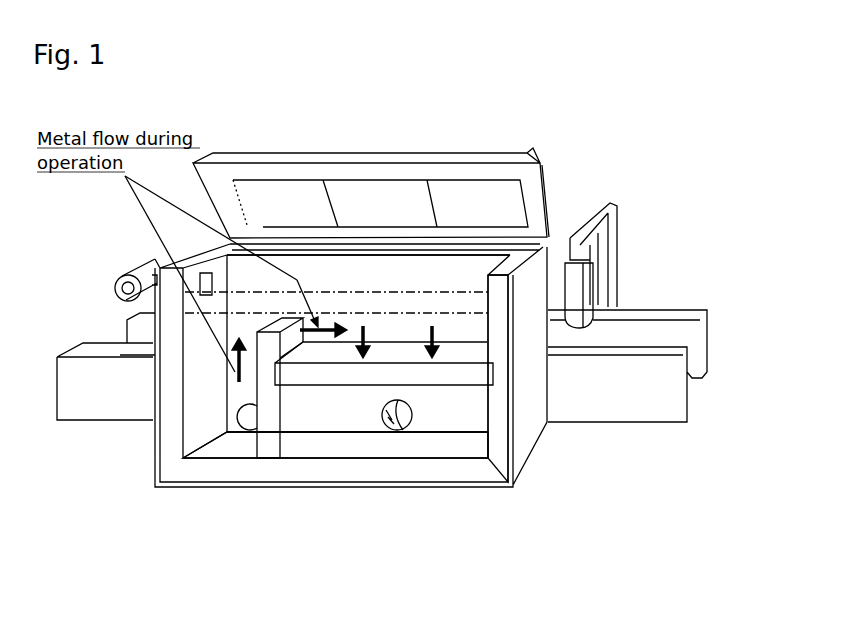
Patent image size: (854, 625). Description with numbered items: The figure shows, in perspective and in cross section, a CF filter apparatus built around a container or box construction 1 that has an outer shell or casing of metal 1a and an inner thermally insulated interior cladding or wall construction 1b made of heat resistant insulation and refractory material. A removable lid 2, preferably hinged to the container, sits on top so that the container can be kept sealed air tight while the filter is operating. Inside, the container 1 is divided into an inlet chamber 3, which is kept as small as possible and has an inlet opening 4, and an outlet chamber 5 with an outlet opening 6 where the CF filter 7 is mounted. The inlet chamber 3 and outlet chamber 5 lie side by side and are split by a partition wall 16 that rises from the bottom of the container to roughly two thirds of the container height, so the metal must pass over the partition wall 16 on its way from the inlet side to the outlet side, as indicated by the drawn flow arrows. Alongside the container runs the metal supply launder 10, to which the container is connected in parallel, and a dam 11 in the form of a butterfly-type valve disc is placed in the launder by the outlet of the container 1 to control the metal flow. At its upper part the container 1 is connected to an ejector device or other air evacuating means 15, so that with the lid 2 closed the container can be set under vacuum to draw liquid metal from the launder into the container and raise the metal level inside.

The container 1 is at (512, 513).
The outer shell or casing of metal 1a is at (507, 357).
The inner thermally insulated interior cladding 1b is at (497, 300).
The removable lid 2 is at (511, 198).
The inlet chamber 3 is at (217, 453).
The inlet opening 4 is at (253, 413).
The outlet chamber 5 is at (373, 463).
The outlet opening 6 is at (403, 427).
The CF filter 7 is at (475, 391).
The metal supply launder 10 is at (622, 327).
The dam 11 is at (628, 261).
The ejector device or air evacuating means 15 is at (141, 256).
The partition wall 16 is at (264, 458).